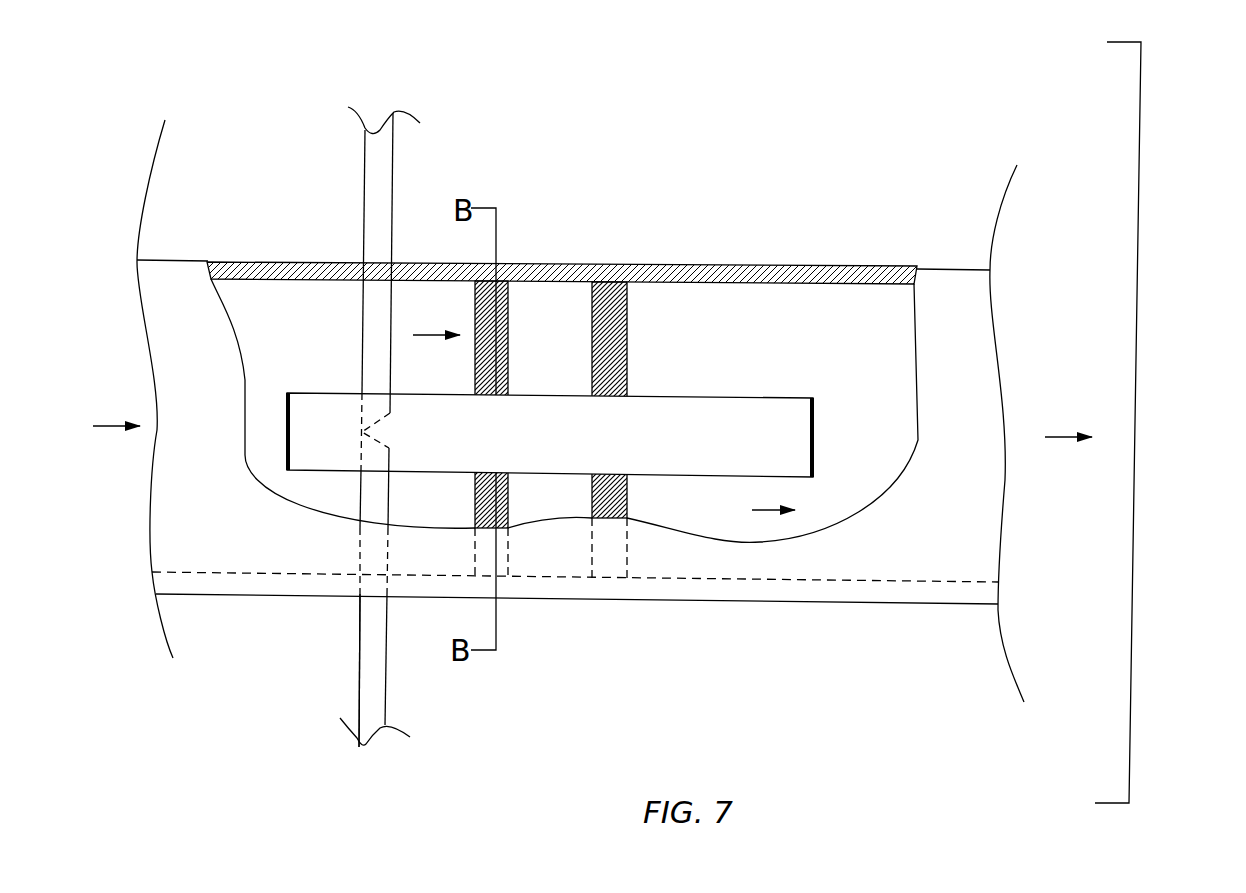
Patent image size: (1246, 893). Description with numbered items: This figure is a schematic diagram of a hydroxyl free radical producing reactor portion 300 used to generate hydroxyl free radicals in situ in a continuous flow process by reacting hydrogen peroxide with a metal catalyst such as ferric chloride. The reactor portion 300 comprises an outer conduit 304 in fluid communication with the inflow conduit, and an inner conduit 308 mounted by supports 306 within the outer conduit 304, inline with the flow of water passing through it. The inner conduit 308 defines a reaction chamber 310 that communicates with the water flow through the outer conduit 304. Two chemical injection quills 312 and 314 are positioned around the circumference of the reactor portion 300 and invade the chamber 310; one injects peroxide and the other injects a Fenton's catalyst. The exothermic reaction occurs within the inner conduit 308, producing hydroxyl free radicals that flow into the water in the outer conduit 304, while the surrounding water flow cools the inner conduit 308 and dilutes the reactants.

The reactor portion 300 is at (1135, 435).
The outer conduit 304 is at (858, 273).
The supports 306 is at (513, 310).
The inner conduit 308 is at (662, 397).
The reaction chamber 310 is at (732, 425).
The chemical injection quill 312 is at (365, 198).
The chemical injection quill 314 is at (360, 638).